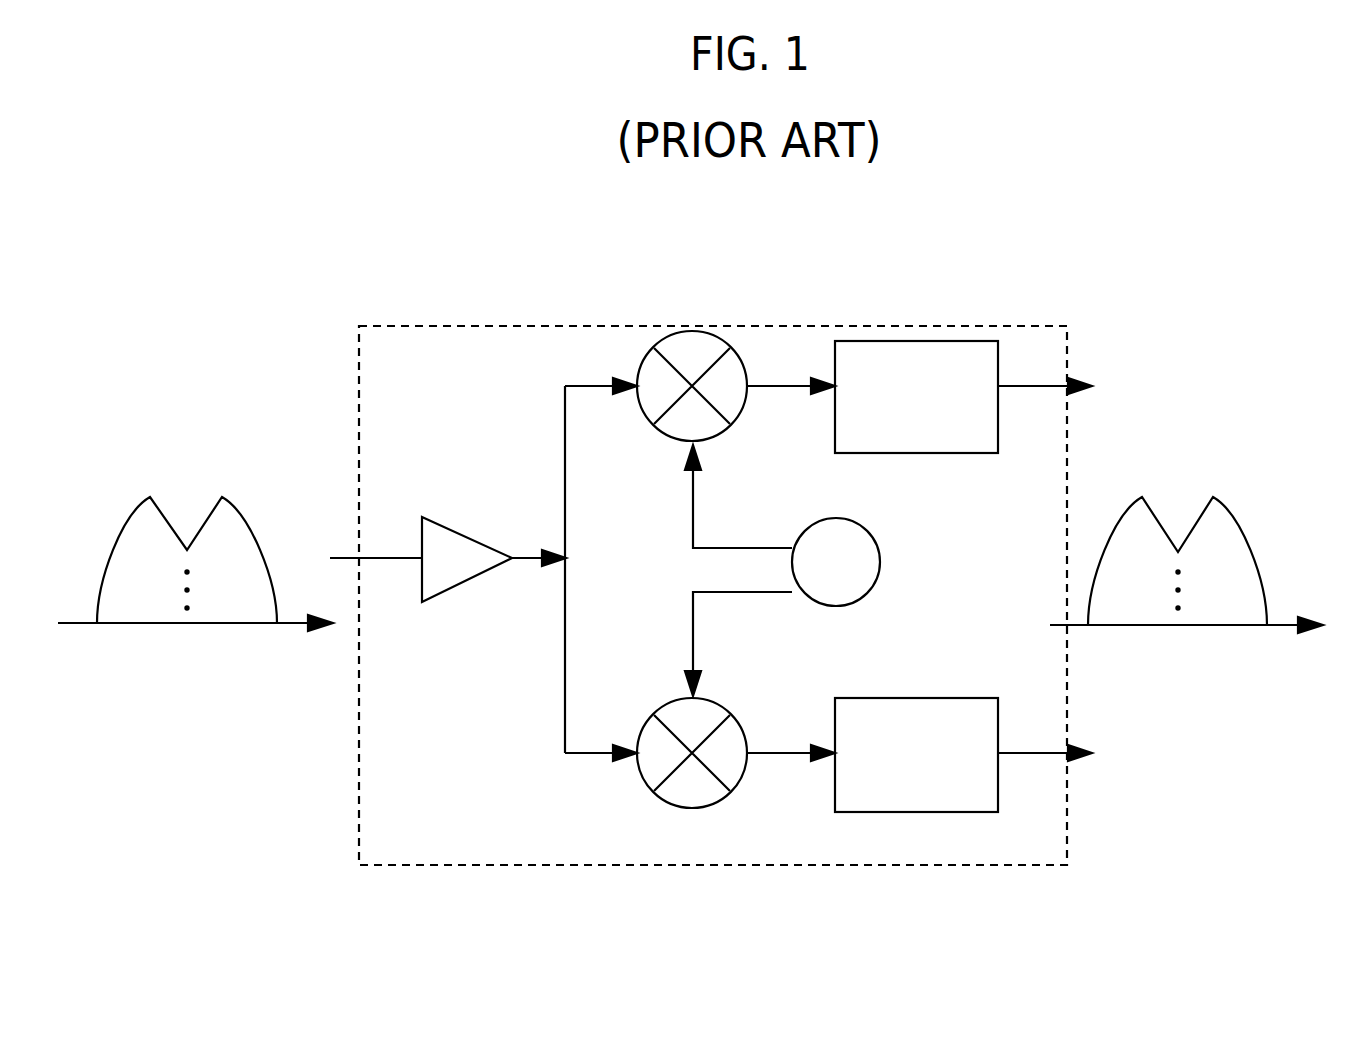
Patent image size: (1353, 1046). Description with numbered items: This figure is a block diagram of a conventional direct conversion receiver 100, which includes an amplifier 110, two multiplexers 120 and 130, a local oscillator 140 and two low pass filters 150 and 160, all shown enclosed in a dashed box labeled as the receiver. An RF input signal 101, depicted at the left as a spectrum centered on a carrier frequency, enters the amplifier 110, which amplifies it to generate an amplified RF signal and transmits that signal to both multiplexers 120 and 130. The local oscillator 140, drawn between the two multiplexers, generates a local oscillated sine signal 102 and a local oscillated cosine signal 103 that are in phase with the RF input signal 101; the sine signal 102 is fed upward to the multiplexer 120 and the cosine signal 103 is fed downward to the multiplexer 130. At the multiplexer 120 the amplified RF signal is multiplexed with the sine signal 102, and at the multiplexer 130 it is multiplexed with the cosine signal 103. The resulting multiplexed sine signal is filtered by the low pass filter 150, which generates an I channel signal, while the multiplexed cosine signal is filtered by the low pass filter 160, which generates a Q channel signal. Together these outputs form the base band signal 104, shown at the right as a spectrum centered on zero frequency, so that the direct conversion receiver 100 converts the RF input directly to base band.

The direct conversion receiver 100 is at (1055, 285).
The RF input signal 101 is at (203, 520).
The local oscillated sine signal 102 is at (727, 548).
The local oscillated cosine signal 103 is at (752, 593).
The base band signal 104 is at (1197, 518).
The amplifier 110 is at (493, 545).
The multiplexer 120 is at (645, 346).
The multiplexer 130 is at (652, 797).
The local oscillator 140 is at (881, 556).
The low pass filter 150 is at (945, 341).
The low pass filter 160 is at (957, 698).